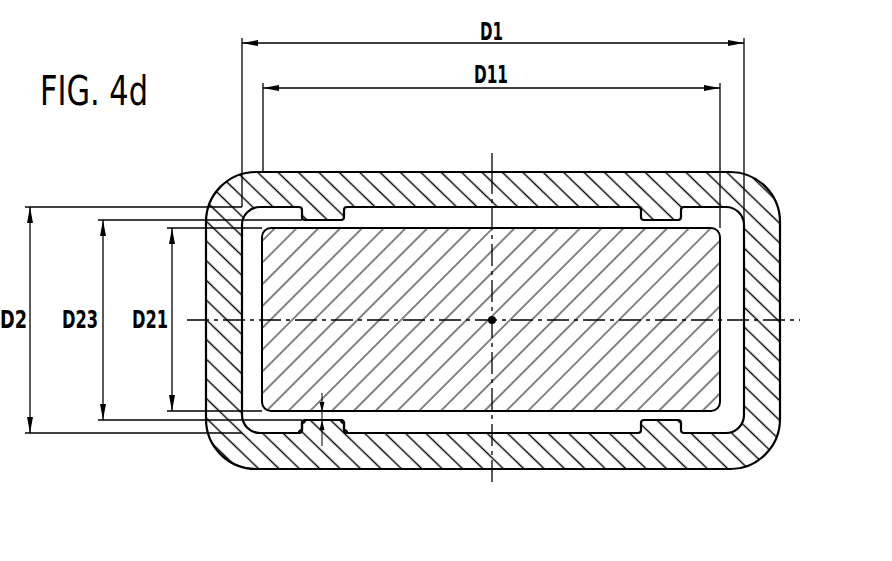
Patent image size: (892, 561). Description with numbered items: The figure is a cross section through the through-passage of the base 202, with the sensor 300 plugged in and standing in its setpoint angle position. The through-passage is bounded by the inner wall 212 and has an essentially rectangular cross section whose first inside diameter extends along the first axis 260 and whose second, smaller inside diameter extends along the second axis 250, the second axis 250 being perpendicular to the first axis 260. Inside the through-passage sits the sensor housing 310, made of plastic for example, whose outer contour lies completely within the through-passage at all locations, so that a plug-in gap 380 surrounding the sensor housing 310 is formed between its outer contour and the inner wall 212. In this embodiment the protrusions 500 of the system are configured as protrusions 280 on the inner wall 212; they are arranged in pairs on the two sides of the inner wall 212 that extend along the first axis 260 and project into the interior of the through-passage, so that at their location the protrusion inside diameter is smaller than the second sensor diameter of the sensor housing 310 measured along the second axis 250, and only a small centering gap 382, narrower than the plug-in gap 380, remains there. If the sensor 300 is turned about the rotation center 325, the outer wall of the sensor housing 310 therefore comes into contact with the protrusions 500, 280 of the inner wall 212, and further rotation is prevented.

The base 202 is at (493, 333).
The inner wall 212 is at (493, 357).
The second axis 250 is at (492, 163).
The first axis 260 is at (577, 320).
The protrusions 280 is at (318, 428).
The sensor 300 is at (491, 332).
The sensor housing 310 is at (491, 332).
The rotation center 325 is at (493, 322).
The plug-in gap 380 is at (727, 417).
The centering gap 382 is at (362, 425).
The protrusions 500 is at (269, 468).